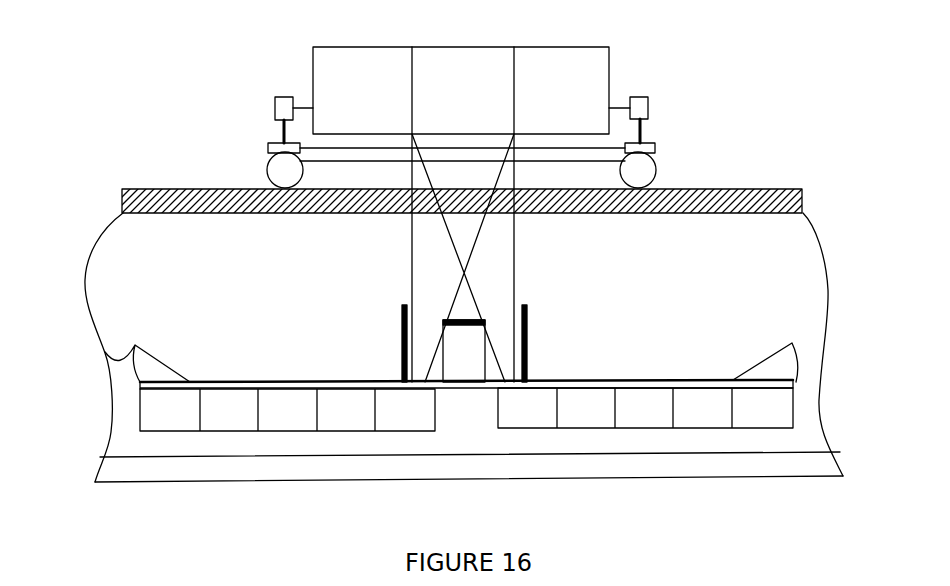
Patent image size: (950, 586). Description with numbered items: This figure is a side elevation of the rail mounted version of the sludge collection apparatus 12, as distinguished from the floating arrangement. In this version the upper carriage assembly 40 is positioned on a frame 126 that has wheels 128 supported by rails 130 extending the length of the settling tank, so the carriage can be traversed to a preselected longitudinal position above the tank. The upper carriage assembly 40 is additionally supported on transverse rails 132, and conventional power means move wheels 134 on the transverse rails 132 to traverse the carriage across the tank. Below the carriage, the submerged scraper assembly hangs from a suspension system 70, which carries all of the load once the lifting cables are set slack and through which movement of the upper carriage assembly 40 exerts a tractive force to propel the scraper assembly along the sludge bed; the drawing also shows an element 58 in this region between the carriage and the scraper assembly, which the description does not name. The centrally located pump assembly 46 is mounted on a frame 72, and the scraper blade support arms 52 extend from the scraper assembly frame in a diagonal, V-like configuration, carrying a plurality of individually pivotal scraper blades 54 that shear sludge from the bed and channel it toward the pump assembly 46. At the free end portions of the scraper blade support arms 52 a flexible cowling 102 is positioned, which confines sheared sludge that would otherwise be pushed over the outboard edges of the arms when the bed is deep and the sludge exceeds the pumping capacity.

The sludge collection apparatus 12 is at (296, 72).
The upper carriage assembly 40 is at (609, 63).
The wheels 134 is at (275, 106).
The transverse rails 132 is at (283, 126).
The wheels 128 is at (278, 170).
The frame 126 is at (578, 153).
The rails 130 is at (762, 188).
The suspension system 70 is at (413, 252).
The crossing beam path 58 is at (530, 265).
The pump assembly 46 is at (438, 311).
The frame 72 is at (402, 326).
The scraper blade support arms 52 is at (235, 382).
The scraper blades 54 is at (180, 428).
The flexible cowling 102 is at (97, 338).